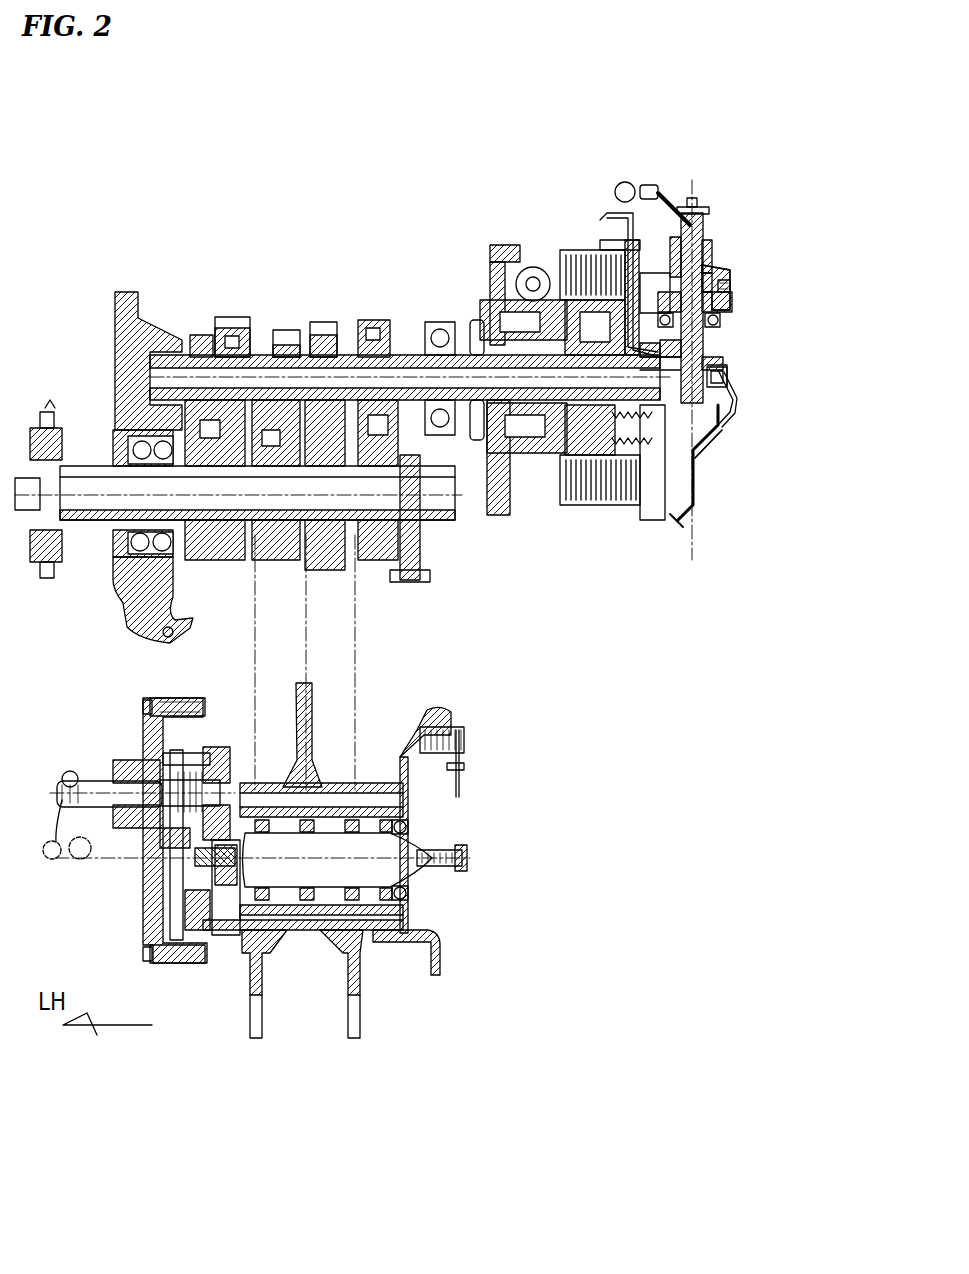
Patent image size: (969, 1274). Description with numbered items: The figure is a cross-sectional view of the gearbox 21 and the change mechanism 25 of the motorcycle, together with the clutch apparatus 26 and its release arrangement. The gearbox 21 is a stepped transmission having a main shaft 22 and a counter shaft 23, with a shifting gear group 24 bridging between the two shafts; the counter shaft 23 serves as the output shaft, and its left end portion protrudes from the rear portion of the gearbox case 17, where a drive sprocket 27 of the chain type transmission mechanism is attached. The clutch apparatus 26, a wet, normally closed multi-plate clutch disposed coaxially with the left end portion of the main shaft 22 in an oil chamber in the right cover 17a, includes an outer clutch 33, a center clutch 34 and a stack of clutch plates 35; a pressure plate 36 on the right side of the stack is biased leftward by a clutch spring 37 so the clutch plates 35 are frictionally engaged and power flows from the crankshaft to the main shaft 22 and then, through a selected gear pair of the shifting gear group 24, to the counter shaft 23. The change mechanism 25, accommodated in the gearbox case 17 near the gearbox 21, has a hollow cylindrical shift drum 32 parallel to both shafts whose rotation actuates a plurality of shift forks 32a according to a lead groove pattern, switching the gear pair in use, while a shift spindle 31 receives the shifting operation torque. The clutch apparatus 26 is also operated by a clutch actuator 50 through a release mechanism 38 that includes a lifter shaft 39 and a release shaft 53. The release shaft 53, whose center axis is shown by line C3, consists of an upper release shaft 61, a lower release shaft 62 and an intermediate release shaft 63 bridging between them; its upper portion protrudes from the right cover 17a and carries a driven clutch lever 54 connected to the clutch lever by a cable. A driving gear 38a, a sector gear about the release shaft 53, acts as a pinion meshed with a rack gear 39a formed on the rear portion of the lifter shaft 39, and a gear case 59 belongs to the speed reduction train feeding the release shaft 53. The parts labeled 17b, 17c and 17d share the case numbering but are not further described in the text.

The gearbox 21 is at (192, 200).
The gearbox case 17 is at (115, 312).
The right cover 17a is at (708, 444).
The casing wall 17b is at (703, 448).
The casing strip 17c is at (640, 247).
The casing boss 17d is at (652, 320).
The main shaft 22 is at (350, 356).
The counter shaft 23 is at (235, 493).
The shifting gear group 24 is at (317, 316).
The change mechanism 25 is at (445, 680).
The clutch apparatus 26 is at (560, 244).
The drive sprocket 27 is at (50, 572).
The shift spindle 31 is at (103, 783).
The shift drum 32 is at (355, 823).
The shift forks 32a is at (310, 735).
The outer clutch 33 is at (583, 253).
The center clutch 34 is at (530, 285).
The clutch plates 35 is at (598, 253).
The pressure plate 36 is at (652, 493).
The clutch spring 37 is at (620, 460).
The release mechanism 38 is at (840, 410).
The driving gear 38a is at (722, 444).
The lifter shaft 39 is at (697, 452).
The rack gear 39a is at (727, 385).
The clutch actuator 50 is at (716, 287).
The release shaft 53 is at (845, 278).
The driven clutch lever 54 is at (665, 195).
The gear case 59 is at (717, 263).
The upper release shaft 61 is at (732, 288).
The lower release shaft 62 is at (724, 355).
The intermediate release shaft 63 is at (733, 302).
The line C3 is at (695, 187).